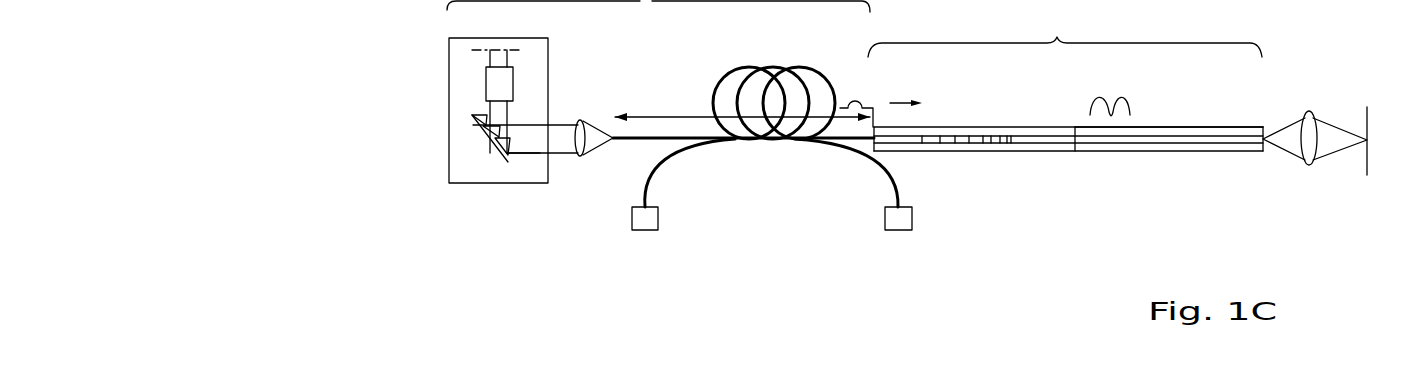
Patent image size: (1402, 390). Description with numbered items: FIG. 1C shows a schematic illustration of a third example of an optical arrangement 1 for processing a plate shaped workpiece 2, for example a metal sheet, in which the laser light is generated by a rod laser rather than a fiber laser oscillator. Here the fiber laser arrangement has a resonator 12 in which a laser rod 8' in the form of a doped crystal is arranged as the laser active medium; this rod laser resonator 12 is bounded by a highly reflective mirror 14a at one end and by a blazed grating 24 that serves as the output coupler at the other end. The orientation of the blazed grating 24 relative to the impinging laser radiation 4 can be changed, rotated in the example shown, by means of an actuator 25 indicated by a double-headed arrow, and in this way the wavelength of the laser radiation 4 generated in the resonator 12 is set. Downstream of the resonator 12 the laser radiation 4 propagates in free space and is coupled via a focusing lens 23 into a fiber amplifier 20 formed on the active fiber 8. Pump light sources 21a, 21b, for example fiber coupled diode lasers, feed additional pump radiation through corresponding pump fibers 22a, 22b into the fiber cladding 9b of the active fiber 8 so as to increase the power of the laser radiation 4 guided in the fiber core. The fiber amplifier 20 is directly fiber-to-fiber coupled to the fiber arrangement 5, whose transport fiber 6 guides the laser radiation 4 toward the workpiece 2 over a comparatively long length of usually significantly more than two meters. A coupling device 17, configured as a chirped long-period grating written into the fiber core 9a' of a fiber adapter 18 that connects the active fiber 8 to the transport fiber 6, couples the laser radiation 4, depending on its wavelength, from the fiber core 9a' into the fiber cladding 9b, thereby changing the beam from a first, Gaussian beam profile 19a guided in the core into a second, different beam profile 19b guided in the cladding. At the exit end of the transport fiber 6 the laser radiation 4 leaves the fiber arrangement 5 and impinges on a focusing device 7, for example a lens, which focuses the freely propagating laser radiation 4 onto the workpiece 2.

The optical arrangement 1 is at (1320, 60).
The workpiece 2 is at (1370, 122).
The laser radiation 4 is at (900, 98).
The fiber arrangement 5 is at (1065, 82).
The transport fiber 6 is at (1217, 104).
The focusing device 7 is at (1310, 135).
The active fiber 8 is at (743, 99).
The laser rod 8' is at (455, 101).
The fiber core 9a' is at (1068, 169).
The fiber cladding 9b is at (948, 128).
The resonator 12 is at (449, 70).
The highly reflective mirror 14a is at (498, 50).
The coupling device 17 is at (991, 135).
The fiber adapter 18 is at (964, 172).
The first beam profile 19a is at (850, 101).
The second beam profile 19b is at (1090, 112).
The fiber amplifier 20 is at (680, 117).
The pump light source 21a is at (655, 219).
The pump light source 21b is at (890, 219).
The pump fiber 22a is at (668, 162).
The pump fiber 22b is at (875, 162).
The focusing lens 23 is at (584, 118).
The blazed grating 24 is at (497, 148).
The actuator 25 is at (518, 171).